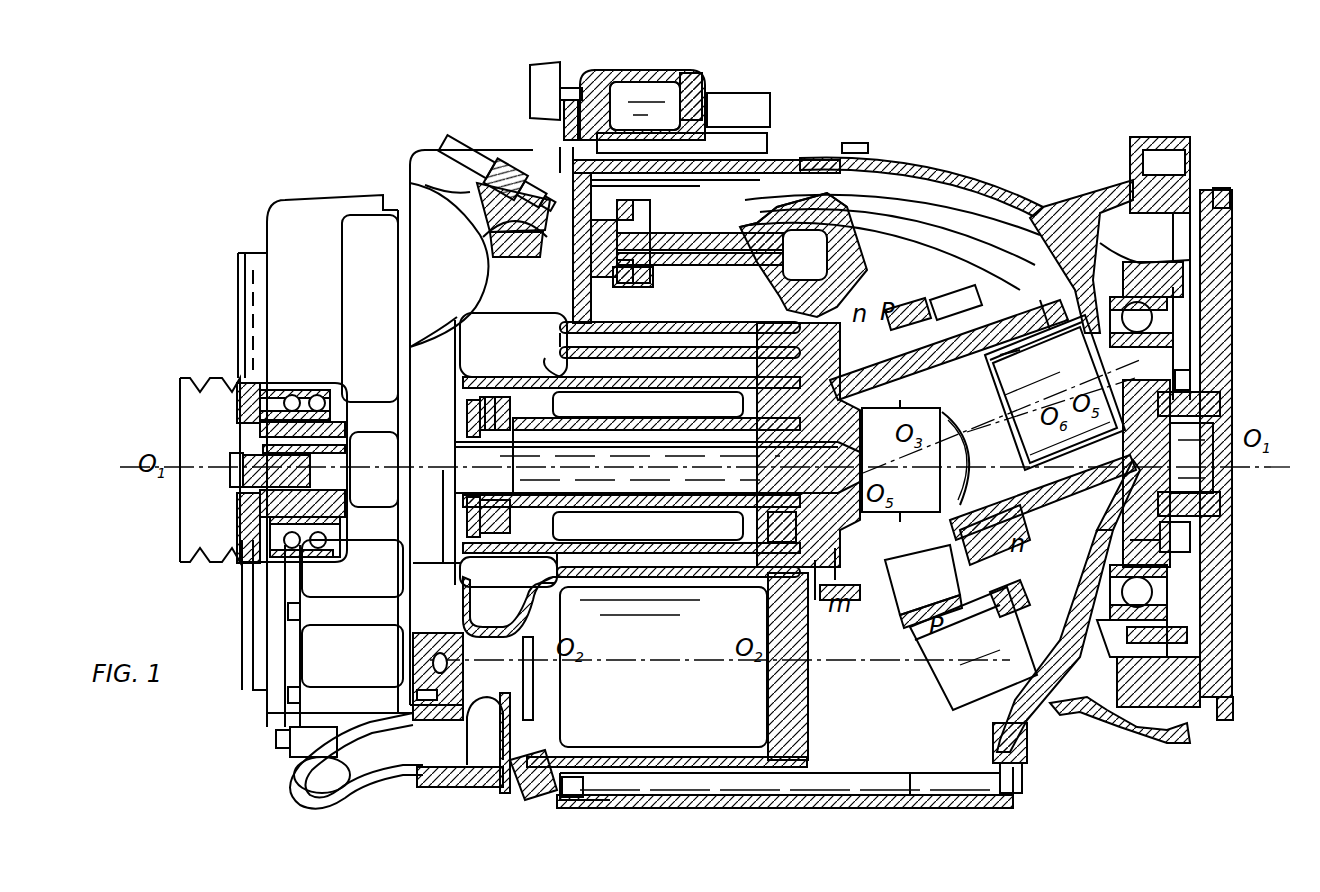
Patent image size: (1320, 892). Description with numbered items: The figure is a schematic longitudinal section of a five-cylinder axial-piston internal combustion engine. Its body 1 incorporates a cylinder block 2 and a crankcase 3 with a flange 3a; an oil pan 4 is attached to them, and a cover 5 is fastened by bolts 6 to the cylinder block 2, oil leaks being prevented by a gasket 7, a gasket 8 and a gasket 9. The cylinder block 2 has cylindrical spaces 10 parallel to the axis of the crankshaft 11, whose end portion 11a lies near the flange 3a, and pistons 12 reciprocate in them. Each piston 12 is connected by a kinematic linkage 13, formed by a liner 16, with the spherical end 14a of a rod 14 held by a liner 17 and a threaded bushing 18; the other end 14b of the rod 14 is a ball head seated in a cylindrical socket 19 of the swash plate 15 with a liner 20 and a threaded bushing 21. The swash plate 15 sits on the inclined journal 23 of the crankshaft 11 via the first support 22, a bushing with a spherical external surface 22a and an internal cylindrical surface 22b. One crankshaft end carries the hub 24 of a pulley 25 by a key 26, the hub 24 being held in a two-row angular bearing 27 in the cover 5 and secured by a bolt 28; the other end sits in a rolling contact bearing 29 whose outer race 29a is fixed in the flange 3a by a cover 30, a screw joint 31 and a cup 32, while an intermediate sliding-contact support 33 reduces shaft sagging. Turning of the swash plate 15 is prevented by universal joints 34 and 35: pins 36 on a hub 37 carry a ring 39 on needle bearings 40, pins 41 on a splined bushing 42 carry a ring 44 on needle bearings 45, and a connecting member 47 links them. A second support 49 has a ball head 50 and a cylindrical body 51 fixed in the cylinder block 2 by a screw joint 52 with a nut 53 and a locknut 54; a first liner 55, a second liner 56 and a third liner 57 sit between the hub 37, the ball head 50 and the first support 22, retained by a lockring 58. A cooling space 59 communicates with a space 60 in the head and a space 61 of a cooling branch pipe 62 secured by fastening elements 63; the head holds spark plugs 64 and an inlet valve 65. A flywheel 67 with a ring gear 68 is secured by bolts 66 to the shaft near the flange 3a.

The body 1 is at (457, 790).
The cylinder block 2 is at (790, 158).
The crankcase 3 is at (1040, 205).
The flange 3a is at (1165, 137).
The oil pan 4 is at (960, 800).
The cover 5 is at (285, 718).
The bolts 6 is at (276, 745).
The gasket 7 is at (845, 143).
The gasket 8 is at (912, 795).
The gasket 9 is at (455, 415).
The cylindrical spaces 10 is at (800, 190).
The crankshaft 11 is at (618, 480).
The shaft end 11a is at (1190, 372).
The pistons 12 is at (605, 200).
The kinematic linkage 13 is at (740, 180).
The rod 14 is at (705, 275).
The end of rod 14a is at (618, 380).
The end of rod 14b is at (770, 270).
The swash plate 15 is at (962, 226).
The liner 16 is at (630, 288).
The liner 17 is at (728, 222).
The threaded bushing 18 is at (650, 280).
The cylindrical socket 19 is at (902, 292).
The liner 20 is at (860, 200).
The threaded bushing 21 is at (762, 222).
The first support 22 is at (1050, 330).
The spherical external surface 22a is at (1040, 300).
The internal cylindrical surface 22b is at (1012, 366).
The inclined journal 23 is at (1010, 425).
The hub 24 is at (347, 486).
The pulley 25 is at (182, 400).
The key 26 is at (268, 440).
The two-row angular rolling-contact bearing 27 is at (310, 556).
The bolt 28 is at (230, 497).
The rolling contact bearing 29 is at (1173, 310).
The outer race 29a is at (1135, 262).
The cover 30 is at (1190, 380).
The screw joint 31 is at (1187, 638).
The cup 32 is at (1190, 532).
The intermediate sliding-contact support 33 is at (753, 420).
The universal joint 34 is at (908, 310).
The universal joint 35 is at (818, 285).
The pins 36 is at (1032, 542).
The hub 37 is at (1060, 505).
The ring 39 is at (940, 310).
The needle bearings 40 is at (980, 590).
The pins 41 is at (855, 600).
The bushing 42 is at (800, 518).
The ring 44 is at (780, 598).
The needle bearings 45 is at (922, 580).
The connecting member 47 is at (915, 672).
The second support 49 is at (931, 598).
The ball head 50 is at (893, 490).
The cylindrical body 51 is at (685, 495).
The screw joint 52 is at (463, 405).
The nut 53 is at (492, 395).
The locknut 54 is at (466, 520).
The first liner 55 is at (808, 425).
The second liner 56 is at (975, 450).
The third liner 57 is at (1020, 365).
The lockring 58 is at (1220, 500).
The cooling space 59 is at (508, 795).
The space 60 is at (440, 200).
The space 61 is at (650, 92).
The cooling branch pipe 62 is at (612, 70).
The fastening elements 63 is at (572, 88).
The spark plugs 64 is at (495, 160).
The inlet valve 65 is at (505, 260).
The bolts 66 is at (1220, 403).
The flywheel 67 is at (1200, 688).
The ring gear 68 is at (1232, 203).